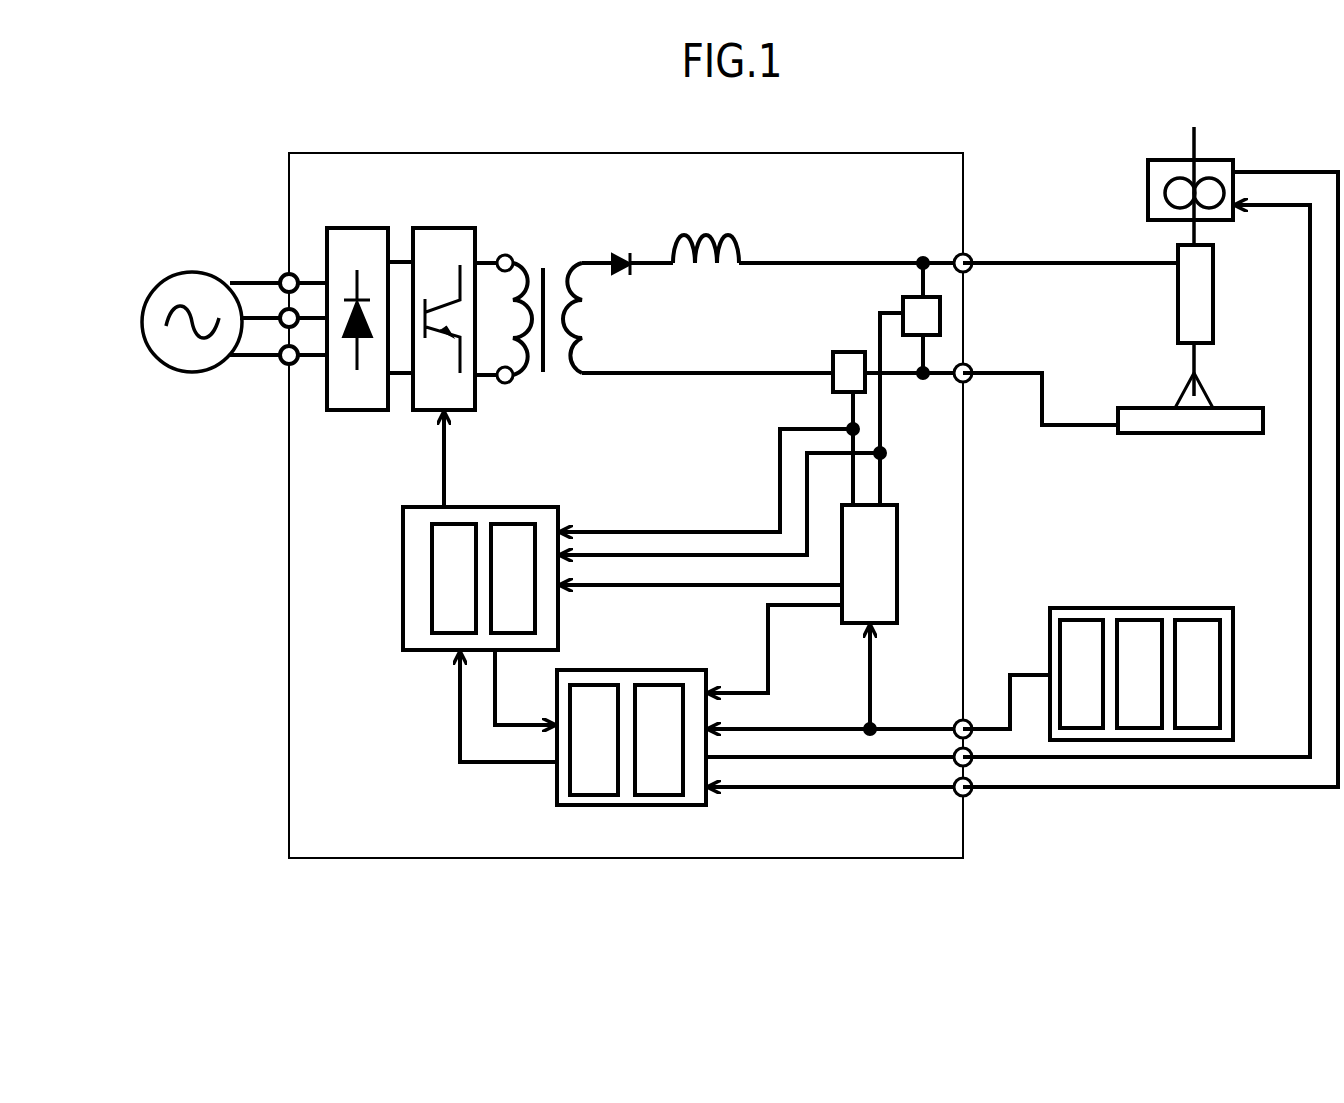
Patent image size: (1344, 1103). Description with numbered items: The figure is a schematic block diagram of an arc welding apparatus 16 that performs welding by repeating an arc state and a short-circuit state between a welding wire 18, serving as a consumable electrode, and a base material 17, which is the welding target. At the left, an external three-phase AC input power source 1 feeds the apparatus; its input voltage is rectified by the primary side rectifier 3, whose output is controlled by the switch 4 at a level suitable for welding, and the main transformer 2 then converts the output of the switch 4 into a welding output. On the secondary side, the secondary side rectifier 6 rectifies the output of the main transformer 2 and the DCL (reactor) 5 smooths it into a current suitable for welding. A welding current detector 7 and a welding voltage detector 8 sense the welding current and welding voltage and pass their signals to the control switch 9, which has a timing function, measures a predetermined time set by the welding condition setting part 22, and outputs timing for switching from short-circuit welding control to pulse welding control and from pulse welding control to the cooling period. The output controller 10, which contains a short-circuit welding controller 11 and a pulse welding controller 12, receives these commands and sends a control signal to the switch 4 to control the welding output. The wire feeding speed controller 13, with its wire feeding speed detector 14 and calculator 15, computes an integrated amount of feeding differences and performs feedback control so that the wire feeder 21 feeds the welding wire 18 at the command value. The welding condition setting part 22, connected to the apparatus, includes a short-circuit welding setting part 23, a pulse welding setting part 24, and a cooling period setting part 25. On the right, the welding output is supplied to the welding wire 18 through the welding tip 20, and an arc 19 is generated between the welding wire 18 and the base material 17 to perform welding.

The input power source 1 is at (193, 372).
The main transformer 2 is at (543, 262).
The primary side rectifier 3 is at (356, 410).
The switch 4 is at (422, 410).
The DCL (reactor) 5 is at (706, 236).
The secondary side rectifier 6 is at (618, 255).
The welding current detector 7 is at (833, 360).
The welding voltage detector 8 is at (903, 302).
The control switch 9 is at (897, 515).
The output controller 10 is at (443, 531).
The short-circuit welding controller 11 is at (457, 524).
The pulse welding controller 12 is at (516, 524).
The wire feeding speed controller 13 is at (711, 755).
The wire feeding speed detector 14 is at (594, 795).
The calculator 15 is at (655, 795).
The arc welding apparatus 16 is at (537, 858).
The base material 17 is at (1190, 433).
The welding wire 18 is at (1194, 140).
The arc 19 is at (1185, 393).
The welding tip 20 is at (1178, 304).
The wire feeder 21 is at (1148, 172).
The welding condition setting part 22 is at (1098, 644).
The short-circuit welding setting part 23 is at (1085, 620).
The pulse welding setting part 24 is at (1141, 620).
The cooling period setting part 25 is at (1201, 620).